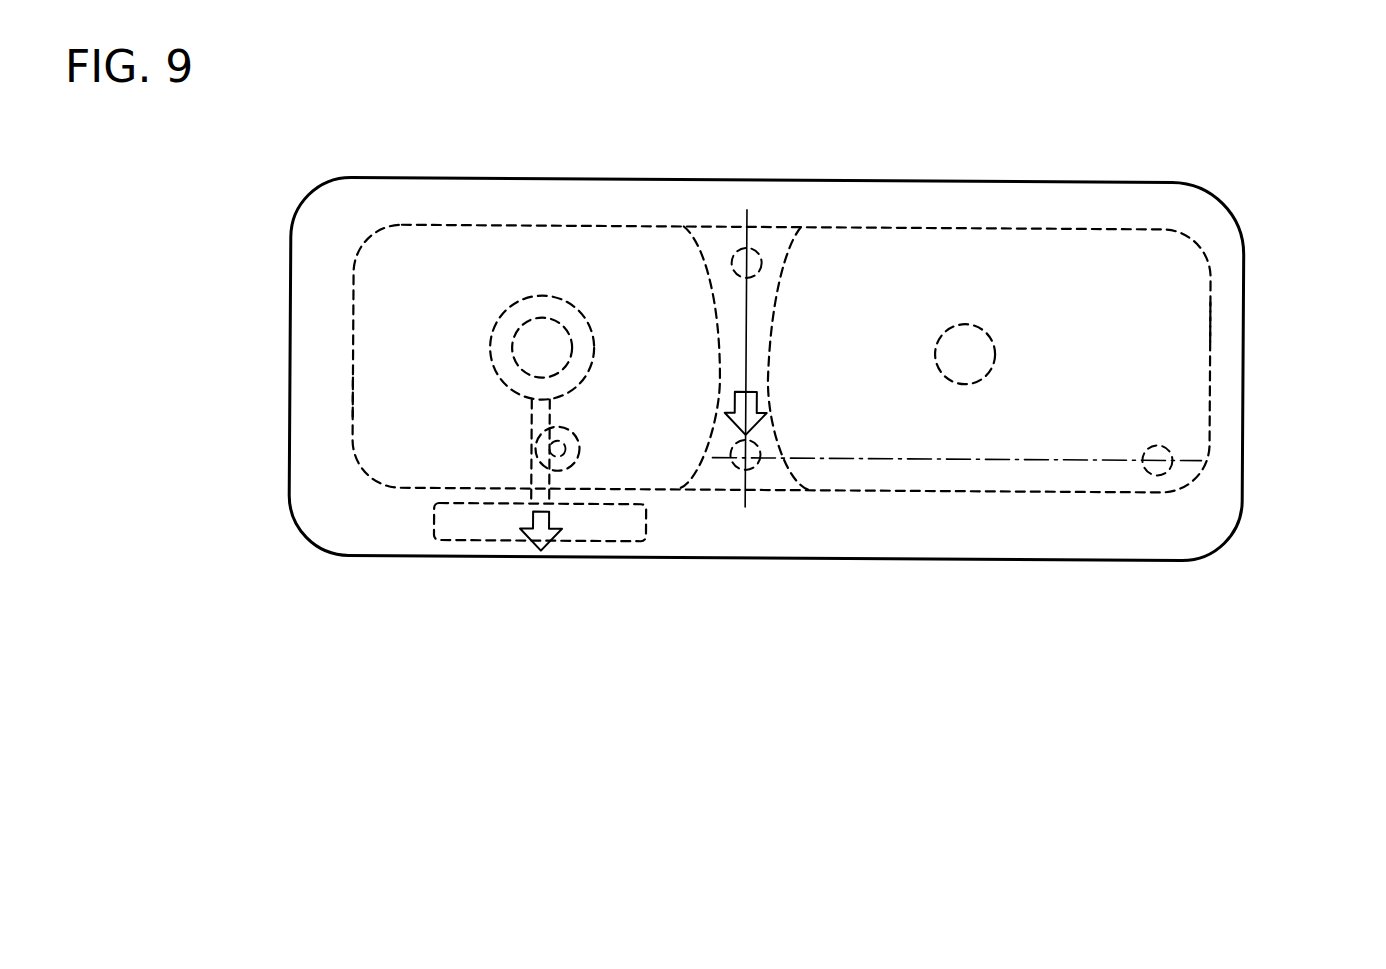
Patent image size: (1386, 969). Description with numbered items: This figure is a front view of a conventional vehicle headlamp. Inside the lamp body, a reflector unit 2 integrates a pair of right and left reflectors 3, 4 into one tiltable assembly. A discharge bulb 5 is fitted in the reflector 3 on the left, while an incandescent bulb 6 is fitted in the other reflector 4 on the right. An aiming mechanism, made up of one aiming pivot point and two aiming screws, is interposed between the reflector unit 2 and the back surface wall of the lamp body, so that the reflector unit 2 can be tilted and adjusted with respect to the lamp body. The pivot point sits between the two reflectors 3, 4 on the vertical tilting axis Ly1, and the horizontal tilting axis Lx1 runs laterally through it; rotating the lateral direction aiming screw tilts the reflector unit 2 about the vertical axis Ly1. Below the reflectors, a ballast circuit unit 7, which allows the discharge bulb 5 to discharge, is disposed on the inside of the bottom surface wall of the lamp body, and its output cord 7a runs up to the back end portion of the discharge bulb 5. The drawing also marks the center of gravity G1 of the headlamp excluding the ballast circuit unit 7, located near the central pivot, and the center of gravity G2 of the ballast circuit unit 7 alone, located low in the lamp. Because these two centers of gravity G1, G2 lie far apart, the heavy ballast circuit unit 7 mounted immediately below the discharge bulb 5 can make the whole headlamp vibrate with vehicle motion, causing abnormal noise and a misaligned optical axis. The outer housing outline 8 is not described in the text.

The reflector unit 2 is at (620, 222).
The reflector 3 is at (537, 225).
The reflector 4 is at (1067, 227).
The discharge bulb 5 is at (515, 366).
The incandescent bulb 6 is at (997, 350).
The ballast circuit unit 7 is at (567, 543).
The output cord 7a is at (530, 432).
The housing 8 is at (980, 524).
The center of gravity of the headlamp excluding the ballast circuit unit G1 is at (758, 404).
The center of gravity of the ballast circuit unit G2 is at (553, 524).
The vertical tilting axis Ly1 is at (746, 330).
The horizontal tilting axis Lx1 is at (1093, 460).